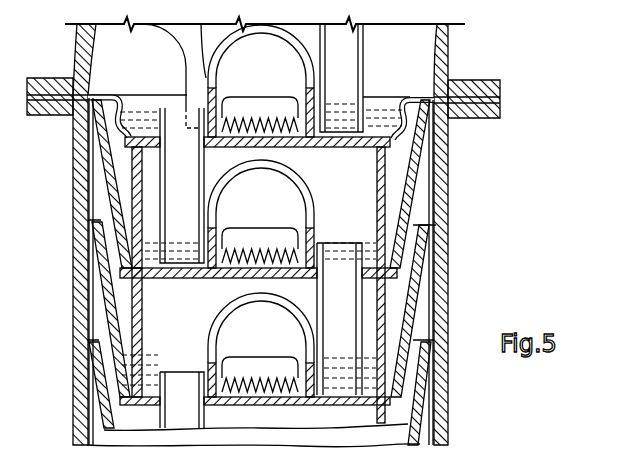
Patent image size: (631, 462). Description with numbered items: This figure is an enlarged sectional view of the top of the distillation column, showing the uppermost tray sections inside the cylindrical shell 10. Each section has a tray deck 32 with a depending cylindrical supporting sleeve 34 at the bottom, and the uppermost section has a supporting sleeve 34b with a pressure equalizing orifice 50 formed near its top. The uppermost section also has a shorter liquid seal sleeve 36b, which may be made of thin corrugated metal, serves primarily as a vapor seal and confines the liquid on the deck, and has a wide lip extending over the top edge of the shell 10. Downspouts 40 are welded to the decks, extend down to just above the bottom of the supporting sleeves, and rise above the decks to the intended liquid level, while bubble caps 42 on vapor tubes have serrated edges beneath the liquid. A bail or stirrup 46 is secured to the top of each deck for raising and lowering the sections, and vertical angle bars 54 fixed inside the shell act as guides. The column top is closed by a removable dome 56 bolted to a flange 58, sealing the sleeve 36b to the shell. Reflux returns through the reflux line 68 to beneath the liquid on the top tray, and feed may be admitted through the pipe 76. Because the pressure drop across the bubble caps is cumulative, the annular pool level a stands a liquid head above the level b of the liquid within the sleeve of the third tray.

The cylindrical shell 10 is at (436, 233).
The tray deck 32 is at (316, 150).
The supporting sleeve 34 is at (141, 304).
The supporting sleeve of the uppermost section 34b is at (378, 201).
The liquid seal sleeve of the uppermost section 36b is at (422, 78).
The downspout 40 is at (158, 197).
The bubble cap 42 is at (243, 234).
The bail or stirrup 46 is at (294, 173).
The pressure equalizing orifice 50 is at (138, 164).
The vertical angle bar 54 is at (433, 162).
The removable dome 56 is at (448, 53).
The flange 58 is at (489, 116).
The reflux line 68 is at (364, 51).
The feed pipe 76 is at (181, 46).
The liquid level of the annular pool a is at (123, 348).
The liquid level within the sleeve b is at (148, 372).